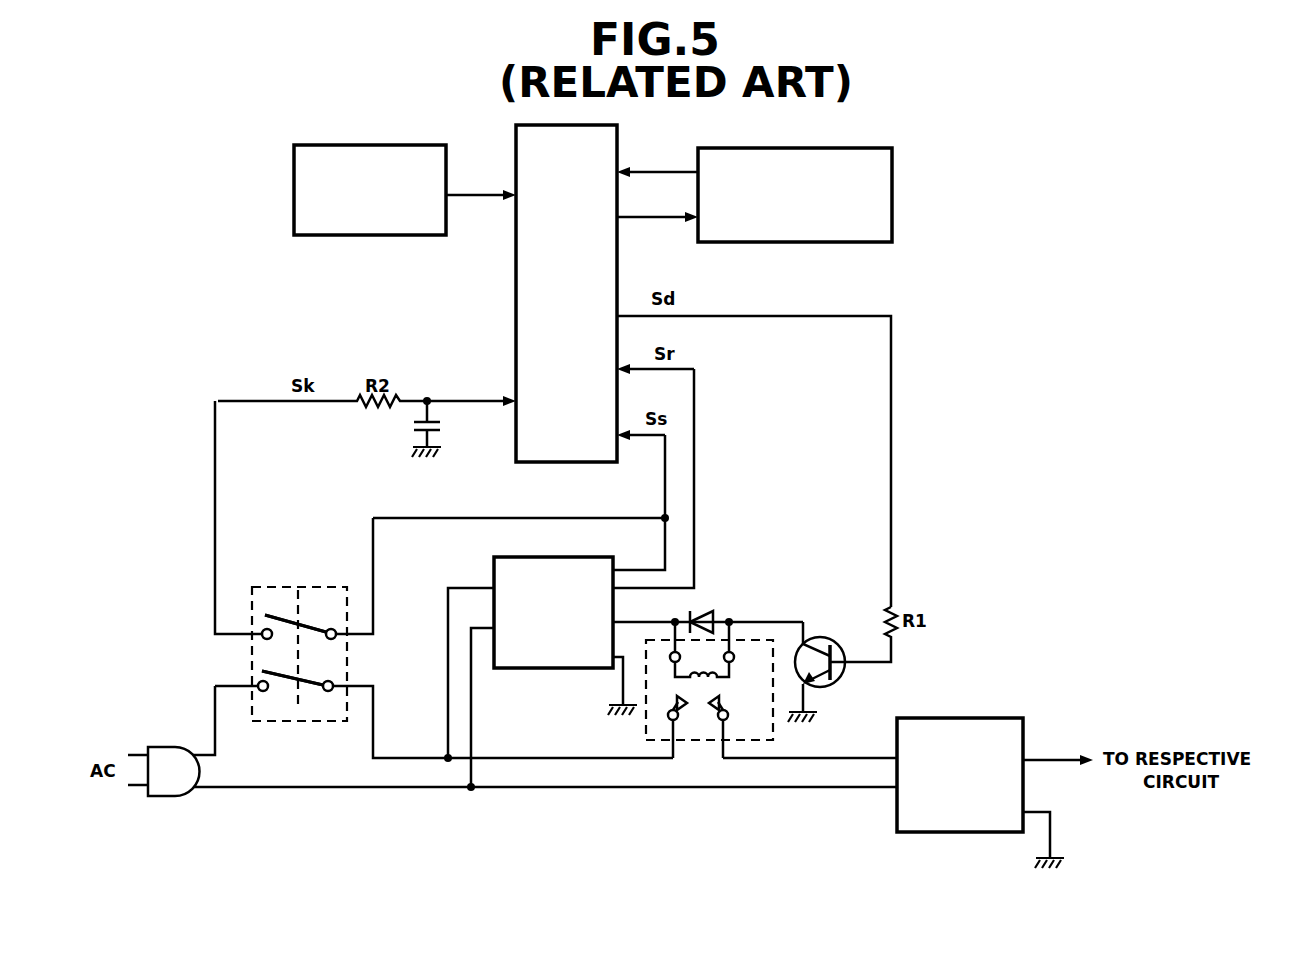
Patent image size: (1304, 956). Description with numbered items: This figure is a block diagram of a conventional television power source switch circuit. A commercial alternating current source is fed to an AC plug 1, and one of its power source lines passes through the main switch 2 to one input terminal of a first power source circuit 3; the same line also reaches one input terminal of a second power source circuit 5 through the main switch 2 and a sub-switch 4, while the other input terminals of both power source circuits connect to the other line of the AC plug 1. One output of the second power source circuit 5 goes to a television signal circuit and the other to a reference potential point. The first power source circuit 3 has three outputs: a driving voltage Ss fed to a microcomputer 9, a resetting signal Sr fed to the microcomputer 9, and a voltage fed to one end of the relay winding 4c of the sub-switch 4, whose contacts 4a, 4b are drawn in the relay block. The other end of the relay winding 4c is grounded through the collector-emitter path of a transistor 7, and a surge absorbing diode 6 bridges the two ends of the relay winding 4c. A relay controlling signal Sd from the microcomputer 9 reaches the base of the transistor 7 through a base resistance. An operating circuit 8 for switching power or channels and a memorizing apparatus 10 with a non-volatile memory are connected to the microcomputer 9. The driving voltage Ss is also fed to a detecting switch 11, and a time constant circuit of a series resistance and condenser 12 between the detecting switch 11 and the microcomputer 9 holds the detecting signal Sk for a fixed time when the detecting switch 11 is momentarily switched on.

The AC plug 1 is at (168, 797).
The main switch 2 is at (283, 690).
The first power source circuit 3 is at (548, 668).
The sub-switch 4 is at (709, 719).
The relay contact of sub-switch 4a is at (668, 717).
The relay contact of sub-switch 4b is at (734, 722).
The relay winding 4c is at (702, 649).
The second power source circuit 5 is at (984, 717).
The surge absorbing diode 6 is at (712, 615).
The transistor 7 is at (822, 637).
The operating circuit 8 is at (446, 165).
The microcomputer 9 is at (617, 152).
The memorizing apparatus 10 is at (892, 148).
The detecting switch 11 is at (307, 612).
The condenser 12 is at (413, 428).